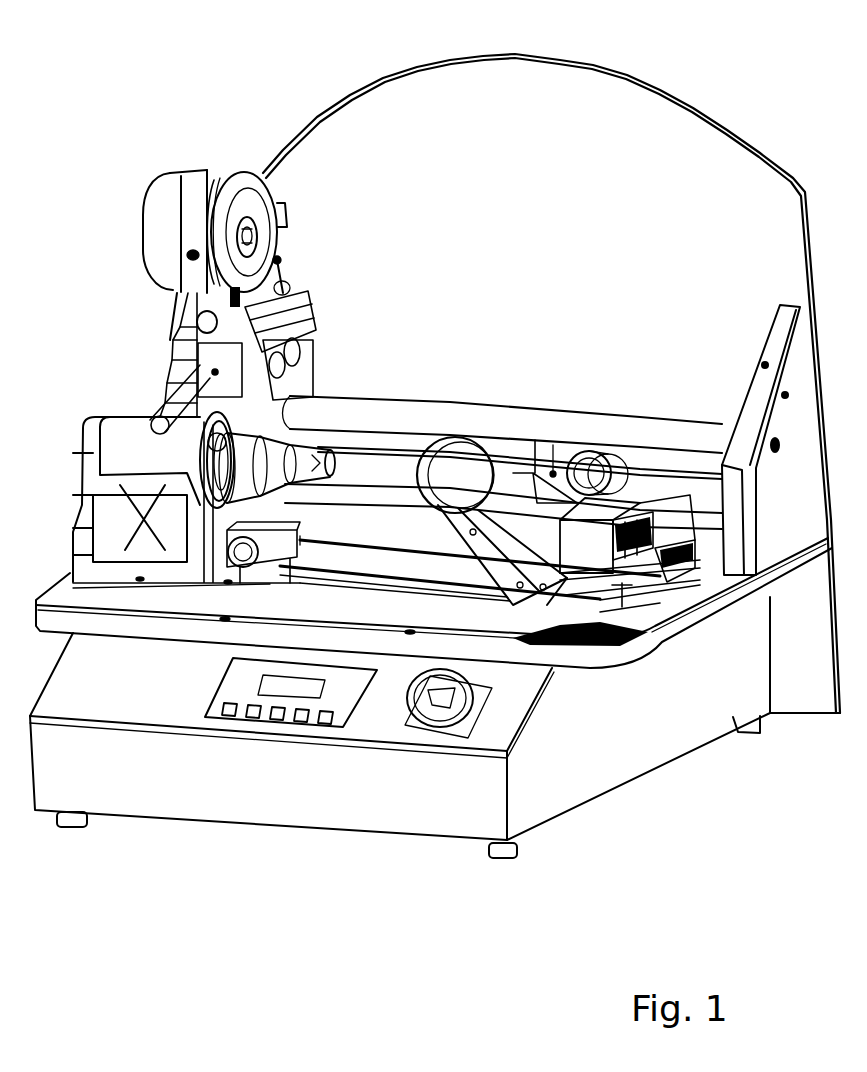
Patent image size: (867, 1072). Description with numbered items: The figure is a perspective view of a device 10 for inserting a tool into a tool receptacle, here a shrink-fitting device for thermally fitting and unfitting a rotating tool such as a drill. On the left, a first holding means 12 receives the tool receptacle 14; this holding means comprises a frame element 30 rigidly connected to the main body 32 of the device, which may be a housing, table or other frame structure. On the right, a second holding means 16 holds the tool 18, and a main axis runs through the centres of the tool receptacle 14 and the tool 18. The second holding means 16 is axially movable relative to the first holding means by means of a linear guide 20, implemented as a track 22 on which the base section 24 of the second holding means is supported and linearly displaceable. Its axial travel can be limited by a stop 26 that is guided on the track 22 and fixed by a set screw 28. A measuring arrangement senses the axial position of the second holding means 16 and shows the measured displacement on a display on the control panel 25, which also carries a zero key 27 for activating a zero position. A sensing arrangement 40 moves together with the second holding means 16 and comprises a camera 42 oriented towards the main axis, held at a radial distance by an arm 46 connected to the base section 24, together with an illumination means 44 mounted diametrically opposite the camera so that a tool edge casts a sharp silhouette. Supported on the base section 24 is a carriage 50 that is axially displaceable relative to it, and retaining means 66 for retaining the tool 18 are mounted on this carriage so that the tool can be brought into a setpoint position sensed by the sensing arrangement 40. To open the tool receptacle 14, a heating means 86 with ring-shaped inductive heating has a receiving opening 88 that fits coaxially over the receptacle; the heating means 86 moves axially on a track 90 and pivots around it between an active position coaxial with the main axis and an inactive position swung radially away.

The device 10 is at (137, 76).
The first holding means 12 is at (180, 418).
The tool receptacle 14 is at (307, 432).
The second holding means 16 is at (651, 500).
The tool 18 is at (553, 472).
The linear guide 20 is at (353, 585).
The track 22 is at (400, 585).
The base section 24 is at (657, 630).
The control panel 25 is at (243, 687).
The stop 26 is at (267, 577).
The zero key 27 is at (227, 713).
The set screw 28 is at (233, 562).
The frame element 30 is at (173, 563).
The main body 32 is at (75, 592).
The sensing arrangement 40 is at (470, 427).
The camera 42 is at (462, 490).
The illumination means 44 is at (590, 470).
The arm 46 is at (478, 592).
The carriage 50 is at (597, 556).
The retaining means 66 is at (533, 471).
The heating means 86 is at (218, 178).
The receiving opening 88 is at (255, 242).
The track 90 is at (125, 437).